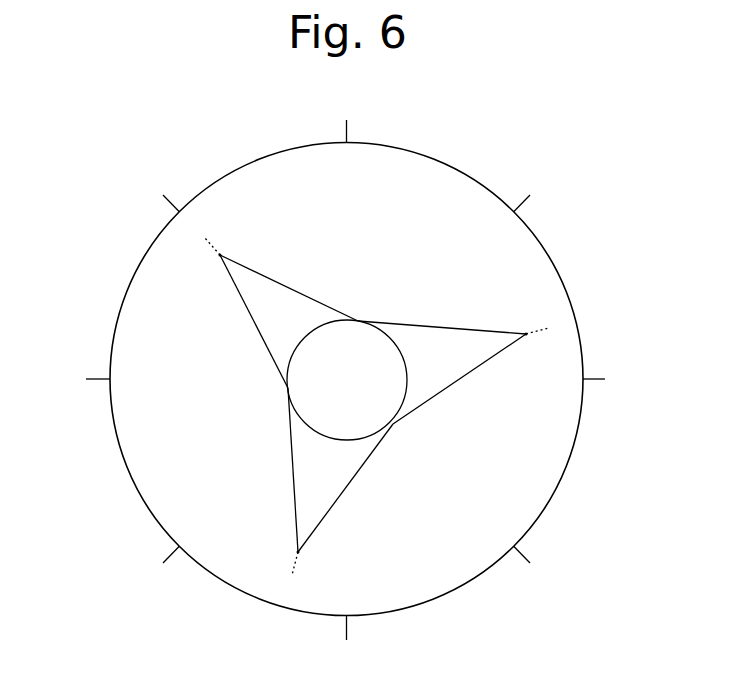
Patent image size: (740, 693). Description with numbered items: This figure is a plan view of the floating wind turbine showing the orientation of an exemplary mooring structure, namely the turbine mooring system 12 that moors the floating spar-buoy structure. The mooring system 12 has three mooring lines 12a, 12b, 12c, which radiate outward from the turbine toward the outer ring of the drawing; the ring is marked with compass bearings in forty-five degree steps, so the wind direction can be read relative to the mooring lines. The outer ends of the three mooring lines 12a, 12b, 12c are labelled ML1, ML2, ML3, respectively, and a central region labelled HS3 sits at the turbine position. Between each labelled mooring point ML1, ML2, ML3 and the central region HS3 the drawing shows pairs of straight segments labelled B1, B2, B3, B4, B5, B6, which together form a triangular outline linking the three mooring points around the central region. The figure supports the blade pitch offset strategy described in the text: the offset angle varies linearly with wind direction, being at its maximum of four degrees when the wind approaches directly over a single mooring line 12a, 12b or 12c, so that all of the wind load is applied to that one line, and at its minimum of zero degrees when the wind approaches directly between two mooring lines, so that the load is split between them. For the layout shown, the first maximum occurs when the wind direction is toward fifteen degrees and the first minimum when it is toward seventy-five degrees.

The mooring system 12 is at (487, 157).
The mooring line 12a is at (297, 555).
The mooring line 12b is at (541, 329).
The mooring line 12c is at (206, 240).
The Hall sensor 3 region HS3 is at (347, 380).
The magnetic line 1 ML1 is at (317, 574).
The magnetic line 2 ML2 is at (550, 346).
The magnetic line 3 ML3 is at (215, 231).
The beam segment 1 B1 is at (280, 470).
The beam segment 2 B2 is at (345, 488).
The beam segment 3 B3 is at (459, 380).
The beam segment 4 B4 is at (442, 315).
The beam segment 5 B5 is at (289, 288).
The beam segment 6 B6 is at (254, 321).